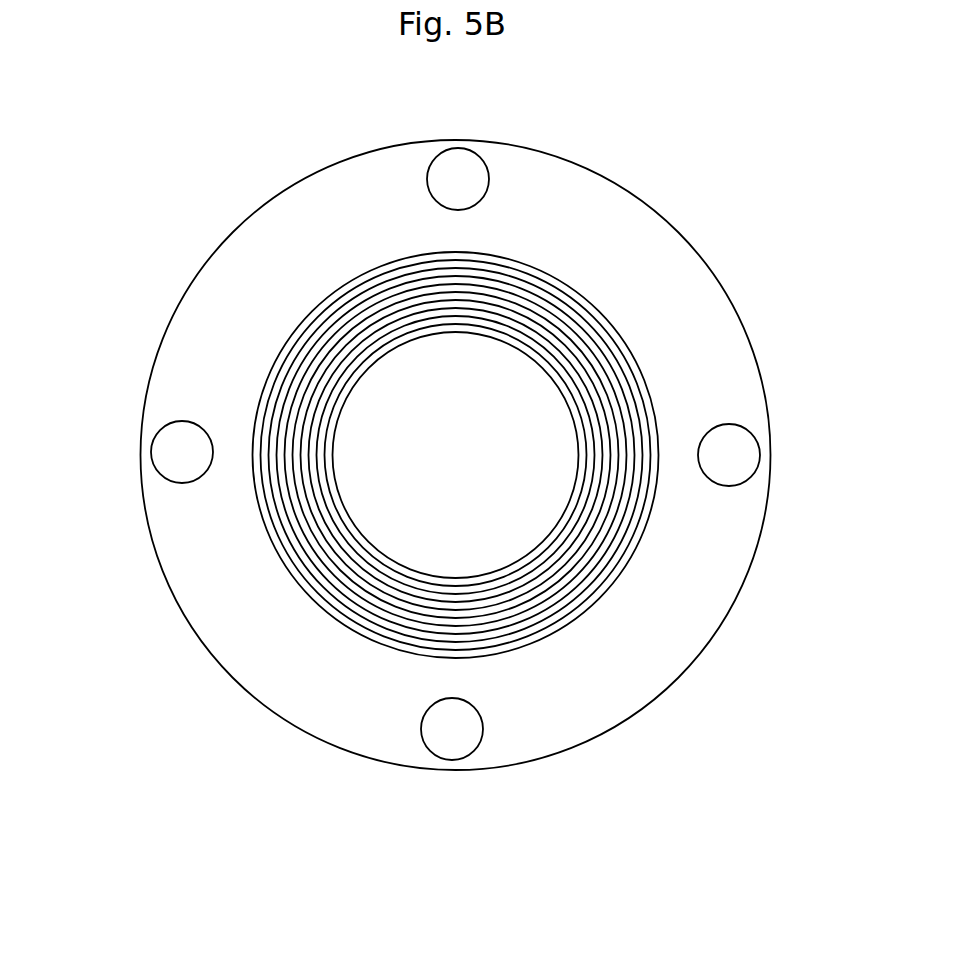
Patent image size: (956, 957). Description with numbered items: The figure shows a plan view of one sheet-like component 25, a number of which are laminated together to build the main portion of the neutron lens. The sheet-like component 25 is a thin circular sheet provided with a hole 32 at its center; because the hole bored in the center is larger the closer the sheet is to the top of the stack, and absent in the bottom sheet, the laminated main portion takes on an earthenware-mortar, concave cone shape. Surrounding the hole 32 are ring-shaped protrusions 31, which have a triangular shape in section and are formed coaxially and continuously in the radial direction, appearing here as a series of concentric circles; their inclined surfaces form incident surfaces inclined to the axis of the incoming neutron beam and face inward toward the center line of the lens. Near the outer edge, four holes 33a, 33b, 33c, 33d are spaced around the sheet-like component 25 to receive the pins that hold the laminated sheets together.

The sheet-like component 25 is at (710, 280).
The ring-shaped protrusion 31 is at (550, 318).
The hole 32 is at (378, 388).
The hole for the pin 33a is at (165, 440).
The hole for the pin 33b is at (442, 160).
The hole for the pin 33c is at (730, 463).
The hole for the pin 33d is at (468, 730).